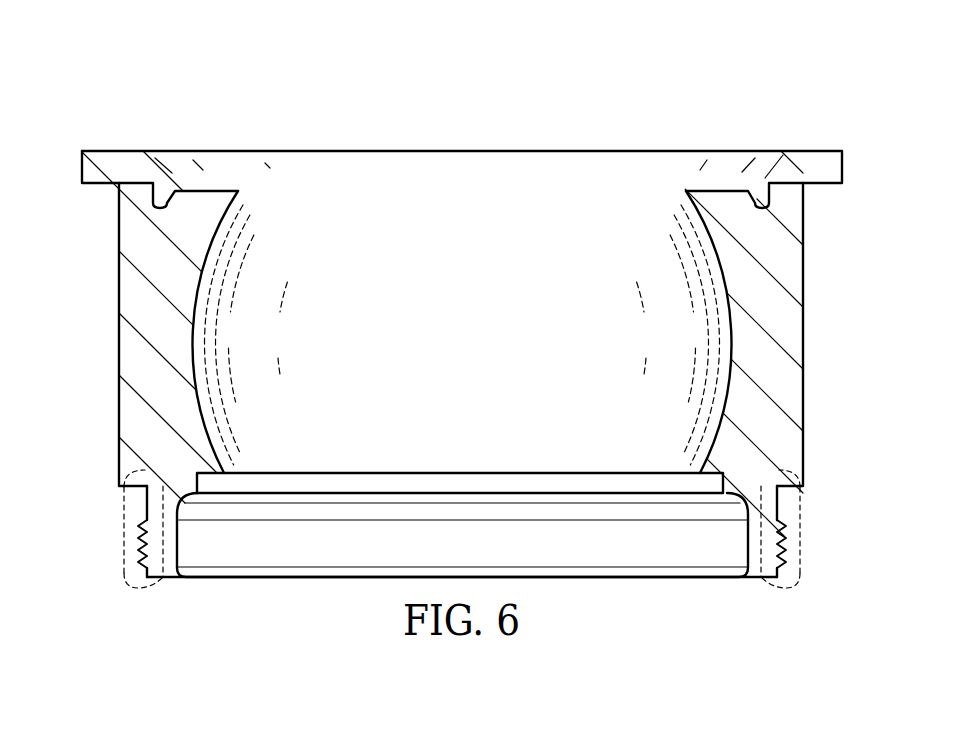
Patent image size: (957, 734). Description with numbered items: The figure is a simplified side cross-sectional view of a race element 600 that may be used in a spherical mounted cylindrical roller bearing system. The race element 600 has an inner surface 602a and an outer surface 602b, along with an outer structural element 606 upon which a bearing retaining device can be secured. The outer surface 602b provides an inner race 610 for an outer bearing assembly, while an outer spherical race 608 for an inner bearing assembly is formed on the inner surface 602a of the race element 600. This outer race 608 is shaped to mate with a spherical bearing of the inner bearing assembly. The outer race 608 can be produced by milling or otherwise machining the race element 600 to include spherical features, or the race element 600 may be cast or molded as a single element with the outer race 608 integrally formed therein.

The race element 600 is at (238, 67).
The inner surface 602a is at (208, 433).
The outer surface 602b is at (117, 285).
The outer structural element 606 is at (128, 525).
The outer race 608 is at (204, 313).
The inner race 610 is at (821, 150).